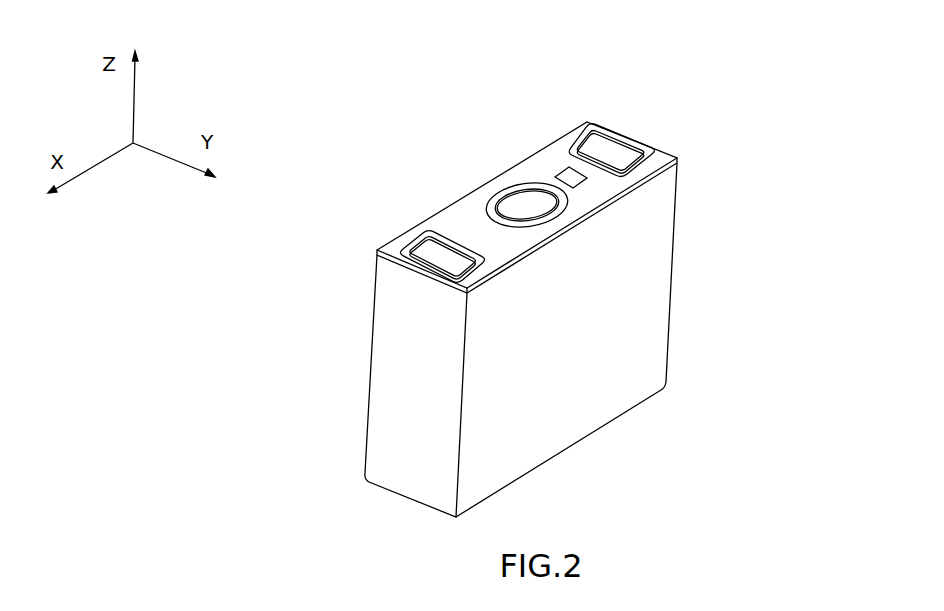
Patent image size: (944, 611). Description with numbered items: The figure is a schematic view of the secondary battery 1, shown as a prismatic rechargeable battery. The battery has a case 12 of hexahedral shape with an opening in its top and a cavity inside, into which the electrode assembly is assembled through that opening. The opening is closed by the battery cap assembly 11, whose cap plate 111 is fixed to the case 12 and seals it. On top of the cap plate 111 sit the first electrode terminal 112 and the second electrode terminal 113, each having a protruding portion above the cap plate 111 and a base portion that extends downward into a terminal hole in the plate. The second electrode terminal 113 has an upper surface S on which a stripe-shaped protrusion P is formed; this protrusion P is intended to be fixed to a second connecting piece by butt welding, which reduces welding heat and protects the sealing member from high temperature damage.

The secondary battery 1 is at (605, 288).
The battery cap assembly 11 is at (517, 194).
The cap plate 111 is at (510, 178).
The first electrode terminal 112 is at (586, 128).
The second electrode terminal 113 is at (421, 233).
The case 12 is at (642, 333).
The protrusion P is at (456, 243).
The upper surface S is at (430, 255).